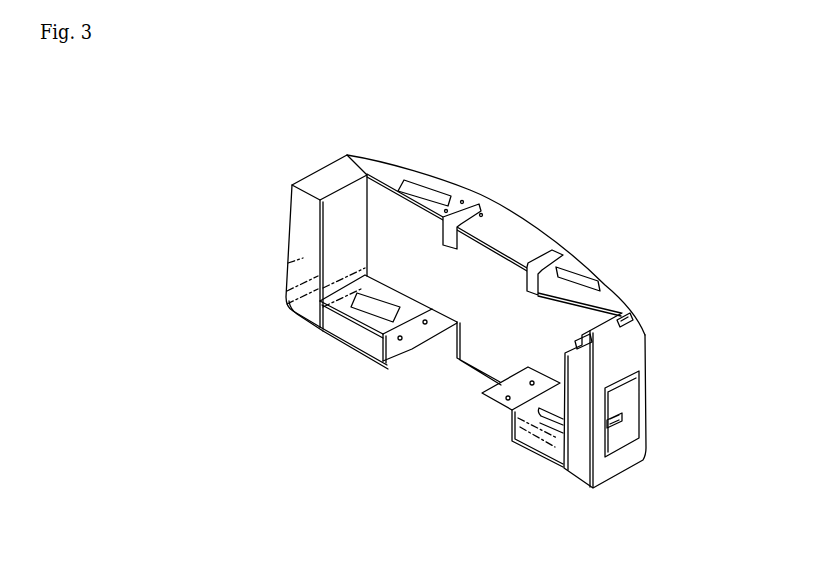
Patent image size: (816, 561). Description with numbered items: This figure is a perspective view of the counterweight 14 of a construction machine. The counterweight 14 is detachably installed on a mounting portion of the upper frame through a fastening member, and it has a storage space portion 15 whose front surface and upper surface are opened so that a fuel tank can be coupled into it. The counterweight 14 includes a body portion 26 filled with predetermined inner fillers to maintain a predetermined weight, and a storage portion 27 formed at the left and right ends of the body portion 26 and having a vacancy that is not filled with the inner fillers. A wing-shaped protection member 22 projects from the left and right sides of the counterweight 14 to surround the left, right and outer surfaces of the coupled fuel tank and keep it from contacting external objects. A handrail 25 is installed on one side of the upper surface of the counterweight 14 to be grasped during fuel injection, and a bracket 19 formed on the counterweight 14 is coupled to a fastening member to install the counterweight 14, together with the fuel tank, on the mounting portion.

The counterweight 14 is at (490, 183).
The storage portion 27 is at (300, 244).
The storage space portion 15 is at (372, 282).
The bracket 19 is at (400, 258).
The body portion 26 is at (483, 300).
The wing-shaped protection member 22 is at (623, 358).
The handrail 25 is at (627, 311).